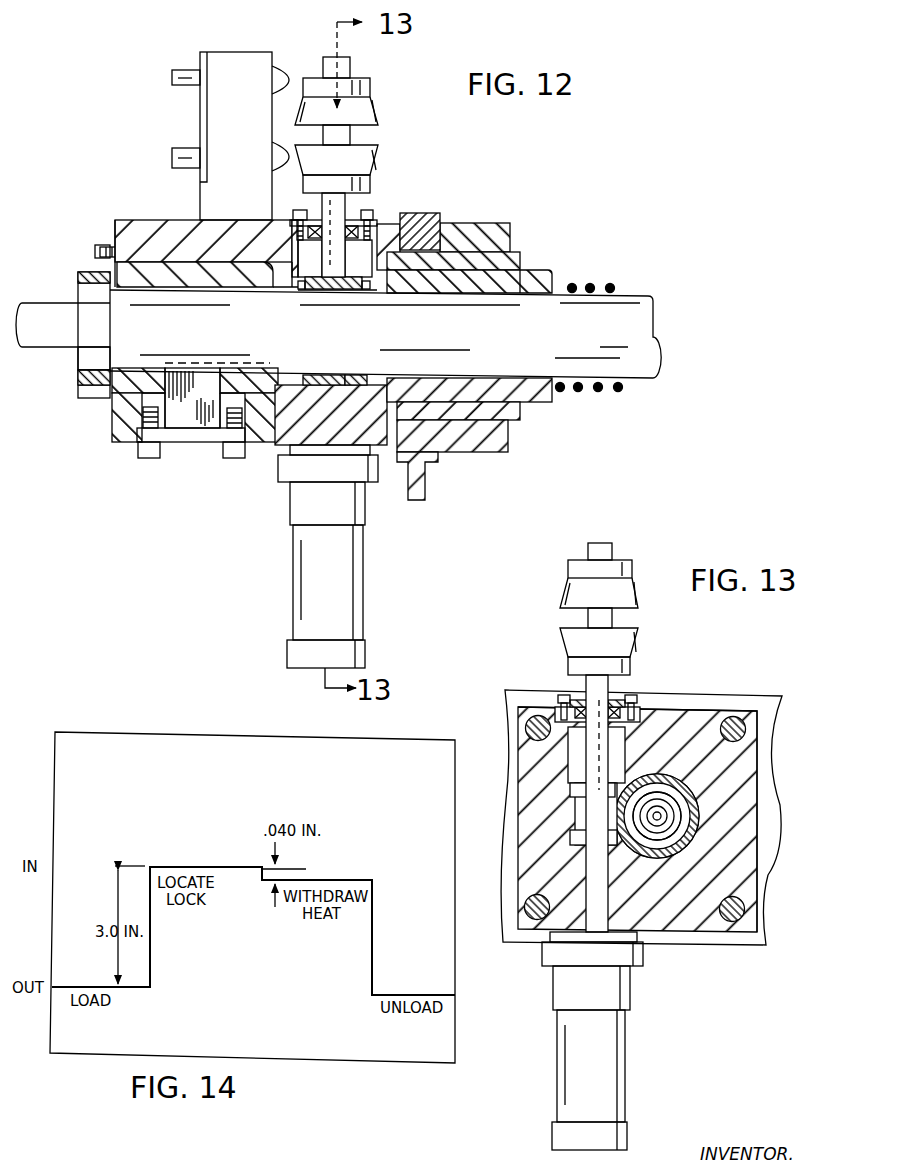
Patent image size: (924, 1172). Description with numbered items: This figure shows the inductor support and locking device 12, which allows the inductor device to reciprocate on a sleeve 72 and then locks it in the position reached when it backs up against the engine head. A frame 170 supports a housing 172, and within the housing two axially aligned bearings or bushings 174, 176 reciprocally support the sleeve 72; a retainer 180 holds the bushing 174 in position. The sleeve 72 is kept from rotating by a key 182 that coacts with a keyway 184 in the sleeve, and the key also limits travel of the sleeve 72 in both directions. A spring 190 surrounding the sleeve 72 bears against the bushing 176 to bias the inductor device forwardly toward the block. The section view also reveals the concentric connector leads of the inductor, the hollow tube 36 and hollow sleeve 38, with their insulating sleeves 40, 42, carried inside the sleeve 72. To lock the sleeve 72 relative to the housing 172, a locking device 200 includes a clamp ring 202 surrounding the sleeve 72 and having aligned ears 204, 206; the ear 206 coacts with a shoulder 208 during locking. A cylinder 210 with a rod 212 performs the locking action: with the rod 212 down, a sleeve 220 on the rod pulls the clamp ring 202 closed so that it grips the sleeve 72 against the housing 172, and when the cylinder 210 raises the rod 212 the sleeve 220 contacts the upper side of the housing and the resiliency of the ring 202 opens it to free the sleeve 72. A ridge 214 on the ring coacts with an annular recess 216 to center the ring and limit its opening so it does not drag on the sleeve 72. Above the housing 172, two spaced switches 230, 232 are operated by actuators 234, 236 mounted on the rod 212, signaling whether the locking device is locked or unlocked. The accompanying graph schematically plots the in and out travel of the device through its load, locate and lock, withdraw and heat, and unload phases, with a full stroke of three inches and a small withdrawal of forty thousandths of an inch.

In FIG. 12, the inductor support and locking device 12 is at (133, 216).
In FIG. 13, the inductor support and locking device 12 is at (687, 673).
In FIG. 13, the hollow tube 36 is at (675, 838).
In FIG. 13, the hollow sleeve 38 is at (672, 797).
In FIG. 13, the insulating sleeve 40 is at (660, 822).
In FIG. 12, the insulating sleeve 42 is at (80, 360).
In FIG. 13, the insulating sleeve 42 is at (676, 835).
In FIG. 12, the sleeve 72 is at (632, 305).
In FIG. 13, the sleeve 72 is at (672, 786).
In FIG. 12, the frame 170 is at (425, 480).
In FIG. 12, the housing 172 is at (152, 225).
In FIG. 13, the housing 172 is at (745, 825).
In FIG. 12, the bushing 174 is at (263, 390).
In FIG. 12, the bushing 176 is at (545, 272).
In FIG. 12, the retainer 180 is at (85, 265).
In FIG. 12, the key 182 is at (200, 428).
In FIG. 12, the keyway 184 is at (230, 360).
In FIG. 12, the spring 190 is at (591, 284).
In FIG. 12, the locking device 200 is at (361, 120).
In FIG. 13, the locking device 200 is at (592, 605).
In FIG. 12, the clamp ring 202 is at (388, 242).
In FIG. 13, the clamp ring 202 is at (695, 730).
In FIG. 13, the ear 204 is at (572, 790).
In FIG. 13, the ear 206 is at (572, 837).
In FIG. 13, the shoulder 208 is at (605, 850).
In FIG. 12, the cylinder 210 is at (362, 585).
In FIG. 13, the cylinder 210 is at (627, 1052).
In FIG. 12, the rod 212 is at (342, 215).
In FIG. 13, the rod 212 is at (590, 756).
In FIG. 12, the ridge 214 is at (348, 380).
In FIG. 12, the annular recess 216 is at (318, 378).
In FIG. 13, the sleeve 220 is at (612, 733).
In FIG. 12, the switch 230 is at (282, 76).
In FIG. 12, the switch 232 is at (283, 150).
In FIG. 12, the actuator 234 is at (352, 98).
In FIG. 13, the actuator 234 is at (566, 590).
In FIG. 12, the actuator 236 is at (370, 160).
In FIG. 13, the actuator 236 is at (567, 647).